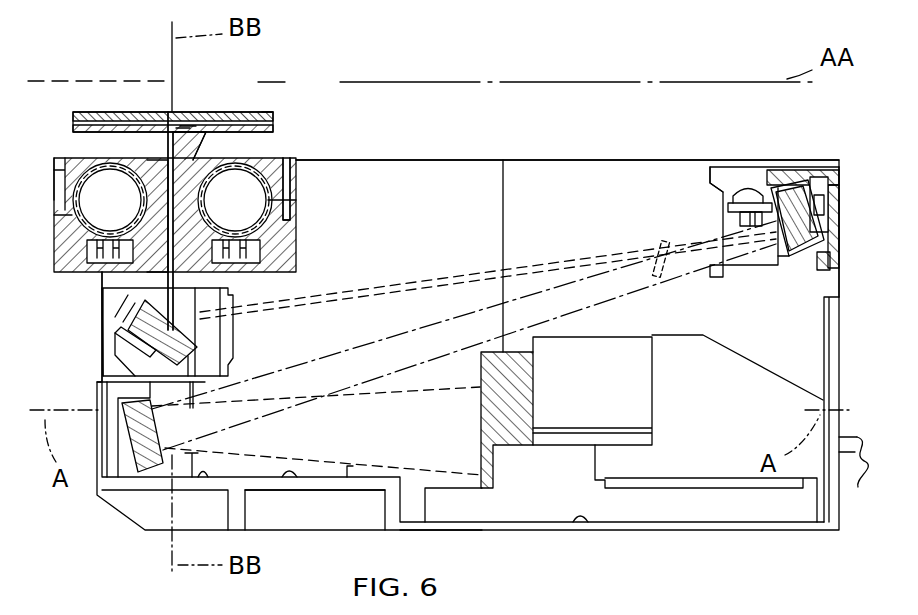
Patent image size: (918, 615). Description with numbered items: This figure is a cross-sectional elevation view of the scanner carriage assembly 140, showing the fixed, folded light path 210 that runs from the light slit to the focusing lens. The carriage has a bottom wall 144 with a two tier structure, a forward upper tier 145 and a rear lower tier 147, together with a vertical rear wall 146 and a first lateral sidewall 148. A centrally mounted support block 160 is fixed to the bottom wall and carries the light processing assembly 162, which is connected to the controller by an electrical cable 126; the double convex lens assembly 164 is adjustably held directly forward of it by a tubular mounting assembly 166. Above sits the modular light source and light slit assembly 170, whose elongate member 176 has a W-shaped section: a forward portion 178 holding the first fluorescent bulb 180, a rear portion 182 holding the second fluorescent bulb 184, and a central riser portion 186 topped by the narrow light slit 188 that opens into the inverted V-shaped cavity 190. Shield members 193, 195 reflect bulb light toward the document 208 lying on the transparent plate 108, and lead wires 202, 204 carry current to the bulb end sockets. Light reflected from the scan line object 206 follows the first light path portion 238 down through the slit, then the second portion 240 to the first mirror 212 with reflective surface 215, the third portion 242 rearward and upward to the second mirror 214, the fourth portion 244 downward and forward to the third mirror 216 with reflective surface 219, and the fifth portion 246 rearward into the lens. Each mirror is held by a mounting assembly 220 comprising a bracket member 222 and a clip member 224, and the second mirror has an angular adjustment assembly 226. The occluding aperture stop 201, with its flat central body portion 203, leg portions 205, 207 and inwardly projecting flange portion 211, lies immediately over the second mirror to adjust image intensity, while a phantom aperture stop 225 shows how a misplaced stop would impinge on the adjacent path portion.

The transparent plate 108 is at (268, 112).
The electrical cable 126 is at (858, 487).
The carriage assembly 140 is at (712, 126).
The bottom wall 144 is at (481, 527).
The forward upper tier 145 is at (280, 483).
The vertical rear wall 146 is at (824, 323).
The rear lower tier 147 is at (576, 525).
The first lateral sidewall 148 is at (577, 158).
The support block 160 is at (668, 505).
The light processing assembly 162 is at (712, 362).
The double convex lens assembly 164 is at (510, 352).
The tubular mounting assembly 166 is at (622, 355).
The modular light source and light slit assembly 170 is at (70, 150).
The elongate member 176 is at (62, 264).
The forward portion 178 is at (62, 222).
The first fluorescent bulb 180 is at (76, 198).
The rear portion 182 is at (285, 247).
The second fluorescent bulb 184 is at (275, 190).
The central riser portion 186 is at (202, 165).
The light slit 188 is at (187, 132).
The inverted V-shaped cavity 190 is at (162, 240).
The shield member 193 is at (65, 162).
The shield member 195 is at (273, 183).
The occluding aperture stop 201 is at (833, 230).
The lead wires 202 is at (90, 266).
The flat central body portion 203 is at (784, 262).
The lead wires 204 is at (96, 296).
The leg portion 205 is at (830, 263).
The scan line object 206 is at (137, 127).
The leg portion 207 is at (790, 180).
The document 208 is at (95, 113).
The light path 210 is at (172, 118).
The inwardly projecting flange portion 211 is at (830, 193).
The first mirror 212 is at (199, 338).
The second mirror 214 is at (773, 172).
The reflective mirror surface 215 is at (469, 347).
The third mirror 216 is at (143, 468).
The reflective mirror surface 219 is at (168, 442).
The mounting assembly 220 is at (735, 163).
The bracket member 222 is at (733, 177).
The clip member 224 is at (832, 182).
The occluding aperture stop 225 is at (652, 246).
The mirror angular adjustment assembly 226 is at (728, 200).
The first light path portion 238 is at (180, 133).
The second light path portion 240 is at (102, 277).
The third light path portion 242 is at (462, 270).
The fourth light path portion 244 is at (350, 340).
The fifth light path portion 246 is at (350, 467).